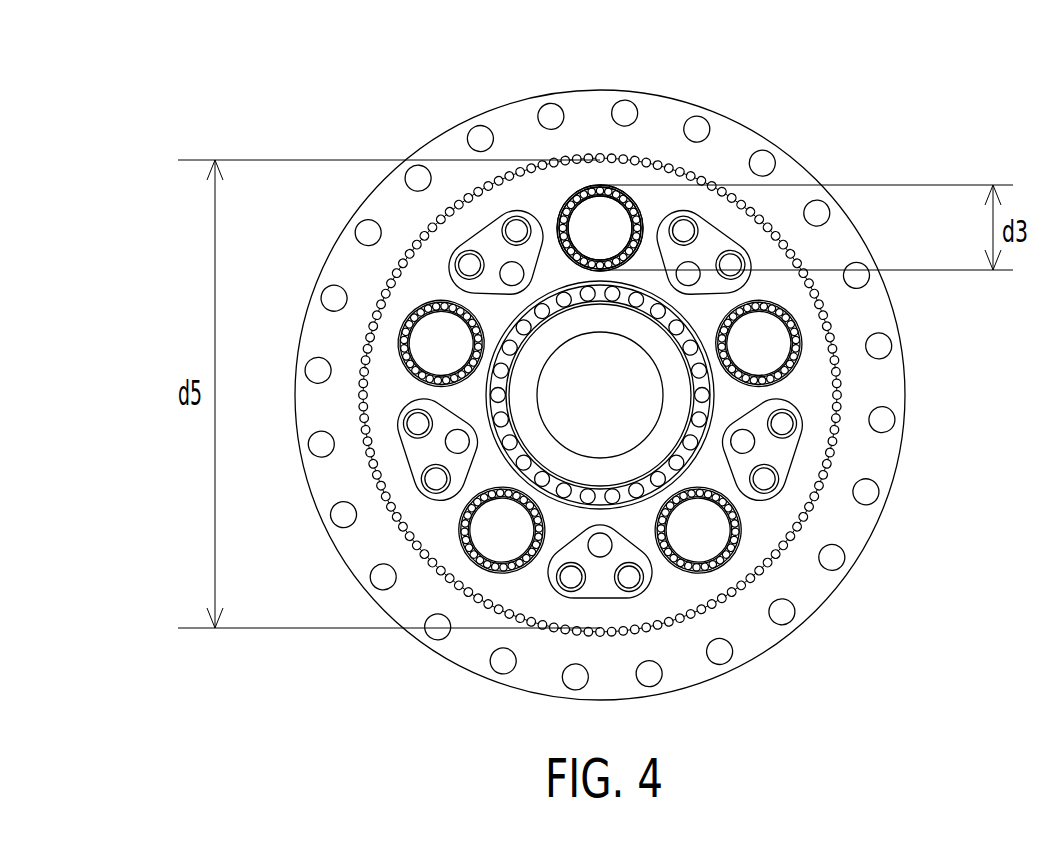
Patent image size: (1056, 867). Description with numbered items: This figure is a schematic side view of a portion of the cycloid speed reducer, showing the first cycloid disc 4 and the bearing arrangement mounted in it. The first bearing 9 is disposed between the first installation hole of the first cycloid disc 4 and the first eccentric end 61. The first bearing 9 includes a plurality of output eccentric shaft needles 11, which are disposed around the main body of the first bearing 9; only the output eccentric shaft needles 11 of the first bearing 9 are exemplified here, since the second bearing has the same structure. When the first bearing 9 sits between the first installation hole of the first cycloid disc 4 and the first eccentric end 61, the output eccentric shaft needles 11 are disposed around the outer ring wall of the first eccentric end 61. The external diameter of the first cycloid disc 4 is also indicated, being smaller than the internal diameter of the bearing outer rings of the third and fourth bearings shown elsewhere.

The first cycloid disc 4 is at (546, 192).
The first bearing 9 is at (595, 184).
The output eccentric shaft needles 11 is at (590, 185).
The first eccentric end 61 is at (614, 222).